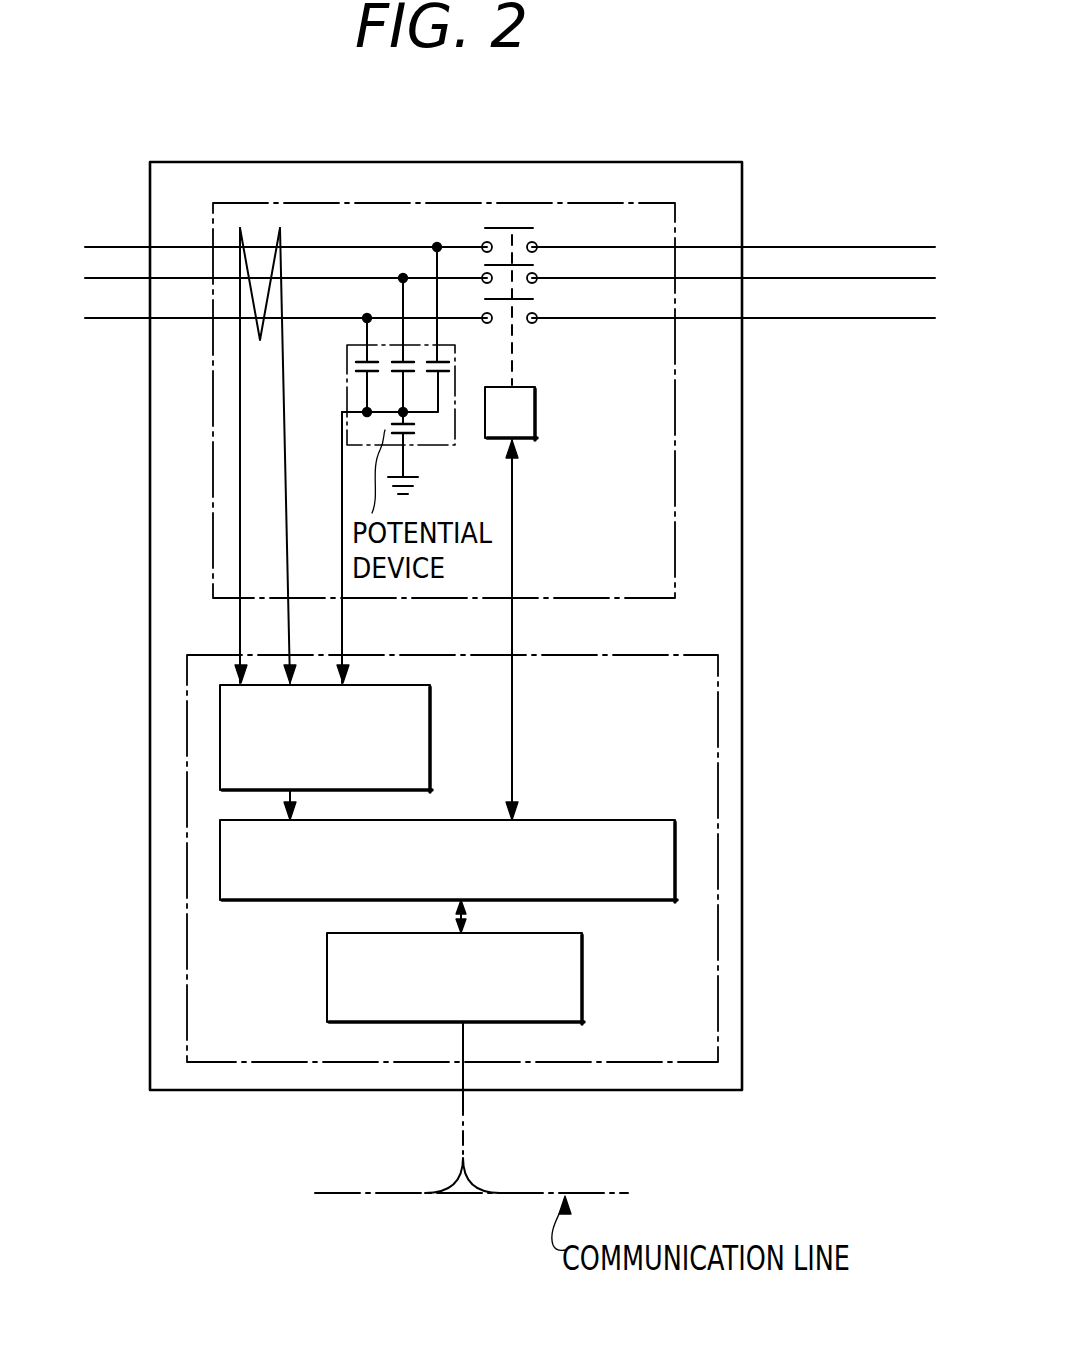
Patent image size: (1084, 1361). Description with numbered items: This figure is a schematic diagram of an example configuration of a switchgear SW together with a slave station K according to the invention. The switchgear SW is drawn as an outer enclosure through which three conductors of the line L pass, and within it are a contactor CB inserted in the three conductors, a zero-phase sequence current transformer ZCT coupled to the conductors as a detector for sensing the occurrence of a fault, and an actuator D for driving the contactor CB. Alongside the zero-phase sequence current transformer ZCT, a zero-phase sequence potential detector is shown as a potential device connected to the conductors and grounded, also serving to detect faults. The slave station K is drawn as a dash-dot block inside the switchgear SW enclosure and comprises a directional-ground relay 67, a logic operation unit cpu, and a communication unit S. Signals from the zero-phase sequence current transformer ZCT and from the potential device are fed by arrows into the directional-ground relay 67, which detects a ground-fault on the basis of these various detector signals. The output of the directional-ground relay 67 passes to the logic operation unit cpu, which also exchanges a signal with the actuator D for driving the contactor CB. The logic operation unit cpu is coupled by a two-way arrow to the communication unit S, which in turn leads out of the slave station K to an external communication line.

The switchgear SW is at (435, 185).
The power line L is at (883, 245).
The zero-phase sequence current transformer ZCT is at (288, 446).
The contactor CB is at (528, 297).
The actuator D is at (535, 395).
The directional-ground relay 67 is at (430, 708).
The slave station K is at (718, 805).
The communication unit S is at (582, 1003).
The logic operation unit cpu is at (275, 900).